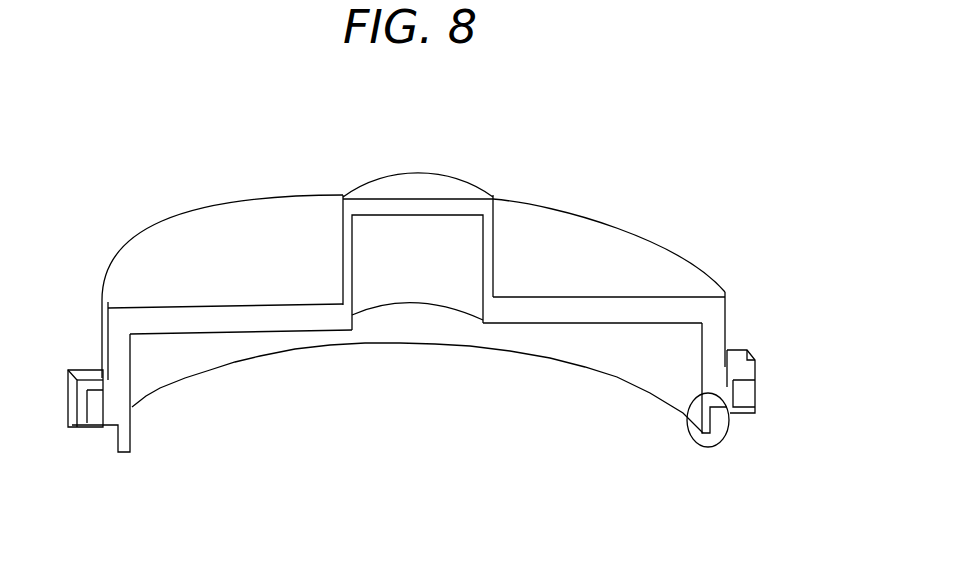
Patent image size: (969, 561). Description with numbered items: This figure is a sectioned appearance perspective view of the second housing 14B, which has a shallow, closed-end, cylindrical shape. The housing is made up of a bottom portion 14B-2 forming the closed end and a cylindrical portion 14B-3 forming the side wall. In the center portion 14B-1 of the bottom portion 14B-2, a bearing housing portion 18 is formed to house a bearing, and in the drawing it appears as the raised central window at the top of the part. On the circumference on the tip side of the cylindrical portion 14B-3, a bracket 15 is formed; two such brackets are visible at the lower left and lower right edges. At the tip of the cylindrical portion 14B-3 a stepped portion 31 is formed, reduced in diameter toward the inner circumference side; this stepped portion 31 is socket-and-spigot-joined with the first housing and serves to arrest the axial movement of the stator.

The second housing 14B is at (467, 317).
The center portion 14B-1 is at (363, 176).
The bottom portion 14B-2 is at (178, 243).
The cylindrical portion 14B-3 is at (718, 335).
The bracket 15 is at (93, 413).
The bearing housing portion 18 is at (417, 277).
The stepped portion 31 is at (710, 440).